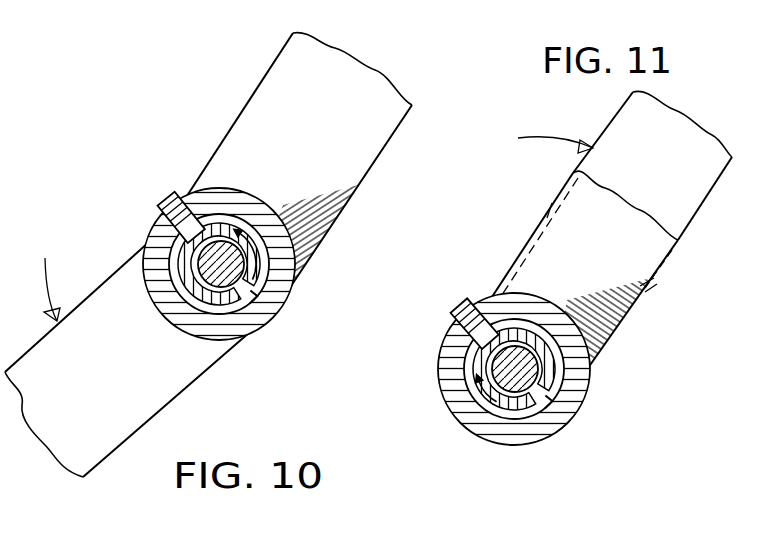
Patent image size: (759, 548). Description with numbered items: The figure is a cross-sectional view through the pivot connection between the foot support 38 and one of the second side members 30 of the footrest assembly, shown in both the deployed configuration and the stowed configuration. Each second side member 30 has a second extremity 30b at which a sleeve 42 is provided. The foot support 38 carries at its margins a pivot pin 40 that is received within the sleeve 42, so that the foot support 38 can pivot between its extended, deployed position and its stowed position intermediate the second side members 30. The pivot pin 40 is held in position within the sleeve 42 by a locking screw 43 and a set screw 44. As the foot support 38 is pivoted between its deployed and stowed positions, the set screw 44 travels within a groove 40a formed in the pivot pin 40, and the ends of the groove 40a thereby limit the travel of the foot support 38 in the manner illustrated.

In FIG. 10, the second side member 30 is at (335, 82).
In FIG. 11, the second side member 30 is at (550, 210).
In FIG. 10, the second extremity of second side member 30b is at (208, 177).
In FIG. 11, the second extremity of second side member 30b is at (617, 347).
In FIG. 10, the foot support 38 is at (62, 413).
In FIG. 11, the foot support 38 is at (625, 130).
In FIG. 10, the pivot pin 40 is at (217, 220).
In FIG. 11, the pivot pin 40 is at (514, 369).
In FIG. 10, the groove 40a is at (240, 307).
In FIG. 11, the groove 40a is at (550, 395).
In FIG. 10, the sleeve 42 is at (173, 313).
In FIG. 11, the sleeve 42 is at (443, 405).
In FIG. 10, the locking screw 43 is at (235, 275).
In FIG. 11, the locking screw 43 is at (512, 368).
In FIG. 10, the set screw 44 is at (158, 208).
In FIG. 11, the set screw 44 is at (460, 313).